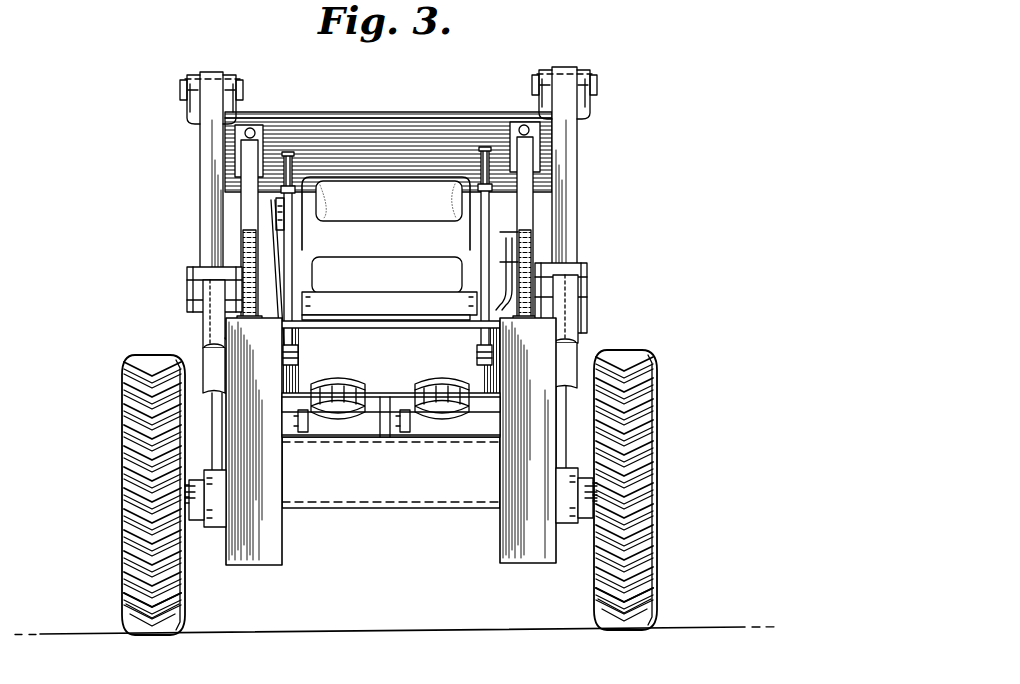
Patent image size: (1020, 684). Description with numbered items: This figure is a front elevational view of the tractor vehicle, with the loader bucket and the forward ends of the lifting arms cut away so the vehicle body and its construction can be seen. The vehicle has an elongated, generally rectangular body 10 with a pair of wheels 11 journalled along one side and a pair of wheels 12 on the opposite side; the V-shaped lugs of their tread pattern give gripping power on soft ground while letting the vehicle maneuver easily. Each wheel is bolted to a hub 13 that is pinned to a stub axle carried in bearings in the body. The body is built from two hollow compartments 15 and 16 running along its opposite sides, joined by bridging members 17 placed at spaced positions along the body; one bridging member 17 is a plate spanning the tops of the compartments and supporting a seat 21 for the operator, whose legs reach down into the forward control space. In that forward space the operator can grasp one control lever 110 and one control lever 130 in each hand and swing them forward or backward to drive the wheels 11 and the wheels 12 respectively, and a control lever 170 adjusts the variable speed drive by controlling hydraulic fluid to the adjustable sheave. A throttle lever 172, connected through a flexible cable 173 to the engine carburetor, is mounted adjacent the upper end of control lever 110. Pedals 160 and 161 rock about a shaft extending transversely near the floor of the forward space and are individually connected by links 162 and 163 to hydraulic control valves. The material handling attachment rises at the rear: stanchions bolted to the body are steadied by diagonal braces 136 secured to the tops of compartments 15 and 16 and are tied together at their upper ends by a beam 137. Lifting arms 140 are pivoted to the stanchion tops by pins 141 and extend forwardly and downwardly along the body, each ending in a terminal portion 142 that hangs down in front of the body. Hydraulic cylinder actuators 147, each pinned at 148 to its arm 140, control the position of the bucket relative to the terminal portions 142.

The body 10 is at (496, 538).
The wheels 11 is at (118, 455).
The wheels 12 is at (660, 437).
The hub 13 is at (198, 505).
The compartment 15 is at (250, 565).
The compartment 16 is at (527, 565).
The bridging members 17 is at (390, 338).
The seat 21 is at (402, 170).
The control lever 110 is at (291, 155).
The control lever 130 is at (484, 150).
The diagonal braces 136 is at (248, 214).
The beam 137 is at (375, 118).
The lifting arms 140 is at (205, 142).
The pins 141 is at (183, 86).
The terminal portion 142 is at (212, 360).
The hydraulic cylinder actuators 147 is at (210, 318).
The pin connection 148 is at (190, 278).
The pedal 160 is at (444, 383).
The pedal 161 is at (340, 383).
The link 162 is at (405, 432).
The link 163 is at (306, 432).
The control lever 170 is at (500, 246).
The throttle lever 172 is at (276, 203).
The flexible cable 173 is at (277, 232).